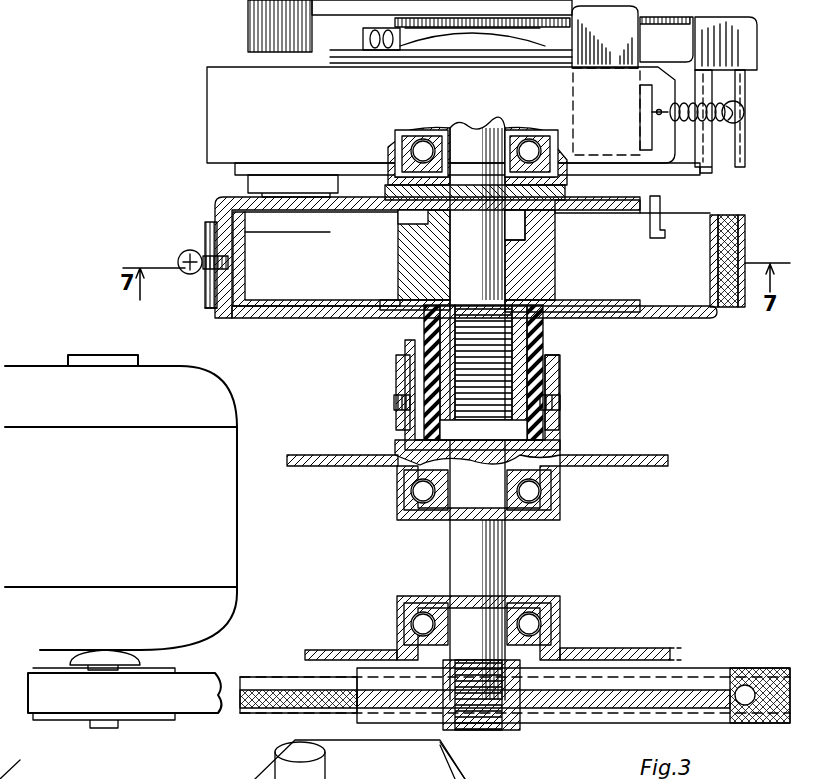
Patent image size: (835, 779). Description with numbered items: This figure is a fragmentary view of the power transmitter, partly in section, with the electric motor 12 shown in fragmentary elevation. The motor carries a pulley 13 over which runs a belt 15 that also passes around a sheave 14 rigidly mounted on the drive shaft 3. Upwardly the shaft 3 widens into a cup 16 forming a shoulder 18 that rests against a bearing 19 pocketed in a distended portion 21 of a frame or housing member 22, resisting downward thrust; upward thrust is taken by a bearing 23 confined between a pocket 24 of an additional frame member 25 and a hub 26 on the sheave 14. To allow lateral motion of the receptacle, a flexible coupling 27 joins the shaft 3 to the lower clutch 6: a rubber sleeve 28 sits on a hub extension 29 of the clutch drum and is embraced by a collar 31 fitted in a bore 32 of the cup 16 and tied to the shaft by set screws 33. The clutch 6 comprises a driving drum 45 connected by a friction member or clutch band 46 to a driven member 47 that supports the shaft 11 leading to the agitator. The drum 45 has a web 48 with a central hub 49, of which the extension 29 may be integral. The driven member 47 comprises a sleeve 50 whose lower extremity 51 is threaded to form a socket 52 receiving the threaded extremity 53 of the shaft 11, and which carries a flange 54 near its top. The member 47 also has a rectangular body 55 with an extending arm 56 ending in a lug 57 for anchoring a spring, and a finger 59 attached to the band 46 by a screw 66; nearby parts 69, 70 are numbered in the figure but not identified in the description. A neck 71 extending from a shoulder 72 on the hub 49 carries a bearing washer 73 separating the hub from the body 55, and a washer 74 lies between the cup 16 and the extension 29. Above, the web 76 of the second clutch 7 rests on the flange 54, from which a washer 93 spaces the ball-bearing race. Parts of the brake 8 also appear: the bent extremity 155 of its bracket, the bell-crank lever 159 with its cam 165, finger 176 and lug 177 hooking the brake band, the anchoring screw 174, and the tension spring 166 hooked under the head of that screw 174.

The drive shaft 3 is at (450, 553).
The lower clutch 6 is at (688, 318).
The second clutch 7 is at (245, 178).
The brake 8 is at (205, 105).
The shaft 11 is at (505, 262).
The electric motor 12 is at (238, 556).
The pulley 13 is at (150, 722).
The sheave 14 is at (705, 680).
The belt 15 is at (770, 670).
The cup 16 is at (548, 430).
The shoulder 18 is at (565, 486).
The bearing 19 is at (560, 502).
The distended portion 21 is at (560, 518).
The frame or housing member 22 is at (358, 468).
The bearing 23 is at (400, 604).
The pocket 24 is at (562, 608).
The additional frame member 25 is at (620, 650).
The hub 26 is at (560, 662).
The flexible coupling 27 is at (545, 345).
The rubber sleeve 28 is at (440, 355).
The hub extension 29 is at (424, 340).
The collar 31 is at (560, 360).
The bore 32 is at (402, 380).
The set screws 33 is at (394, 402).
The drum 45 is at (245, 312).
The friction member 46 is at (745, 310).
The driven member 47 is at (212, 203).
The web 48 is at (295, 318).
The hub 49 is at (398, 285).
The sleeve 50 is at (450, 258).
The lower extremity 51 is at (440, 432).
The socket 52 is at (540, 412).
The threaded extremity 53 is at (545, 336).
The flange 54 is at (460, 170).
The body 55 is at (320, 215).
The extending arm 56 is at (395, 752).
The lug 57 is at (668, 240).
The finger 59 is at (205, 310).
The screw 66 is at (188, 255).
The insulating strip 69 is at (206, 228).
The screw shank 70 is at (200, 270).
The neck 71 is at (515, 225).
The shoulder 72 is at (560, 222).
The bearing washer 73 is at (400, 232).
The washer 74 is at (430, 447).
The web 76 is at (385, 178).
The washer 93 is at (395, 186).
The extremity 155 is at (745, 58).
The bell-crank lever 159 is at (246, 13).
The cam 165 is at (270, 36).
The tension spring 166 is at (730, 125).
The screw 174 is at (740, 118).
The finger 176 is at (575, 62).
The lug 177 is at (640, 105).